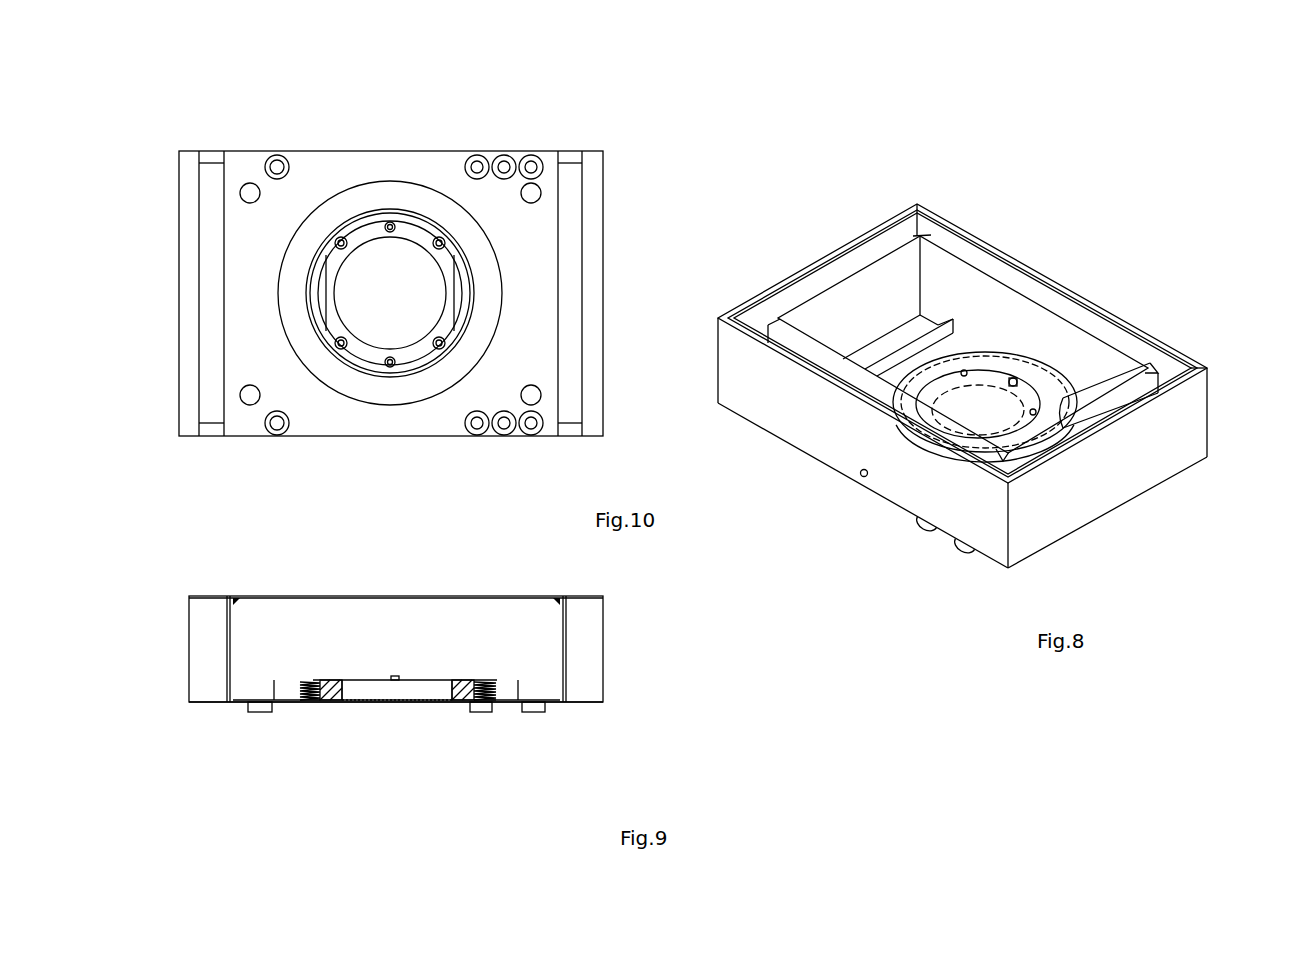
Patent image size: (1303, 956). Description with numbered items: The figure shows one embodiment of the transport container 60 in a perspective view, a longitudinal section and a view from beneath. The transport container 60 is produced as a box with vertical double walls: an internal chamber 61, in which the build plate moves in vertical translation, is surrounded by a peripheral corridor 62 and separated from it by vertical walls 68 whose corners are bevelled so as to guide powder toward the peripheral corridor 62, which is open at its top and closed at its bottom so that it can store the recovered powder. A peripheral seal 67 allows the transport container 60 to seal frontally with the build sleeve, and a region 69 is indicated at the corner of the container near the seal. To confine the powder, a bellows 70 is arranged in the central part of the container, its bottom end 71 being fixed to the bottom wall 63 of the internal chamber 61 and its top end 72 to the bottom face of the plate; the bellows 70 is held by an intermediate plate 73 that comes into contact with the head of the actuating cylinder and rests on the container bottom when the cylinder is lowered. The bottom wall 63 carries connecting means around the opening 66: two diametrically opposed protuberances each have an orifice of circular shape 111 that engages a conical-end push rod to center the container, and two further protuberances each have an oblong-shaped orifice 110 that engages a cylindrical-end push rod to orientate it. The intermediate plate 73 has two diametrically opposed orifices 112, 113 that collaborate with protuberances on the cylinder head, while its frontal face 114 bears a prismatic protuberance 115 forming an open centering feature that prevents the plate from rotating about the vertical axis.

In FIG. 9, the transport container 60 is at (638, 721).
In FIG. 8, the internal chamber 61 is at (939, 298).
In FIG. 9, the internal chamber 61 is at (552, 650).
In FIG. 8, the peripheral corridor 62 is at (1175, 369).
In FIG. 9, the peripheral corridor 62 is at (198, 618).
In FIG. 10, the bottom wall 63 is at (538, 250).
In FIG. 9, the bottom wall 63 is at (555, 695).
In FIG. 10, the opening 66 is at (399, 262).
In FIG. 8, the opening 66 is at (1004, 420).
In FIG. 9, the opening 66 is at (382, 688).
In FIG. 8, the peripheral seal 67 is at (780, 285).
In FIG. 8, the vertical walls 68 is at (855, 287).
In FIG. 8, the corner recess 69 is at (775, 322).
In FIG. 9, the bellows 70 is at (302, 690).
In FIG. 9, the bottom end 71 is at (312, 700).
In FIG. 9, the top end 72 is at (305, 682).
In FIG. 9, the intermediate plate 73 is at (462, 692).
In FIG. 10, the oblong-shaped orifice 110 is at (504, 162).
In FIG. 10, the orifice of circular shape 111 is at (275, 160).
In FIG. 10, the orifice 112 is at (390, 221).
In FIG. 10, the orifice 113 is at (390, 368).
In FIG. 10, the frontal face 114 is at (390, 293).
In FIG. 8, the frontal face 114 is at (988, 380).
In FIG. 8, the protuberance 115 is at (1017, 381).